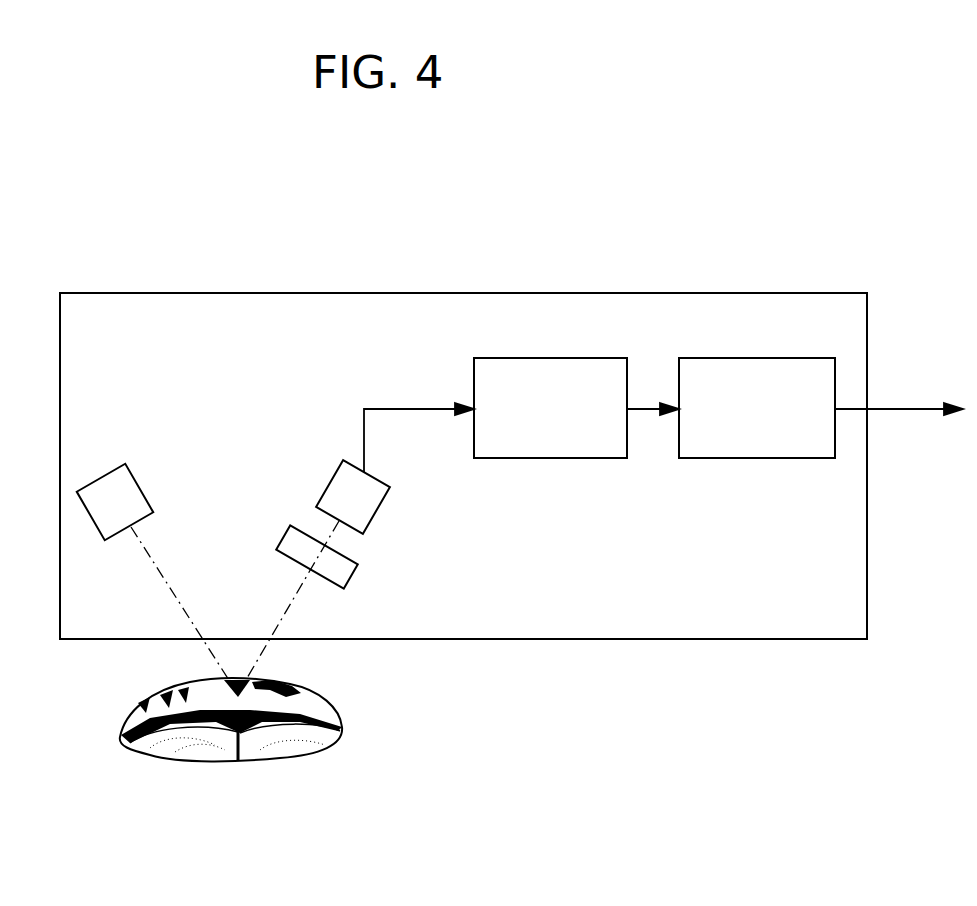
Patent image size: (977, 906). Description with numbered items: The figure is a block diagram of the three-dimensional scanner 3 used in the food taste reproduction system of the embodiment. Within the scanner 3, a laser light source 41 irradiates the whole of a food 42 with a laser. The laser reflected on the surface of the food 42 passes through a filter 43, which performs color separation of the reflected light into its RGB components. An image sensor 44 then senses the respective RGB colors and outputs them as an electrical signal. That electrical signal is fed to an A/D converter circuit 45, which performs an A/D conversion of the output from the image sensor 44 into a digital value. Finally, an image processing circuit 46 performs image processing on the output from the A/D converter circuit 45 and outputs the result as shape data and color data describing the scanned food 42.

The 3D scanner 3 is at (313, 293).
The laser light source 41 is at (108, 477).
The food 42 is at (335, 738).
The filter 43 is at (347, 581).
The image sensor 44 is at (380, 506).
The A/D converter circuit 45 is at (513, 358).
The image processing circuit 46 is at (747, 358).